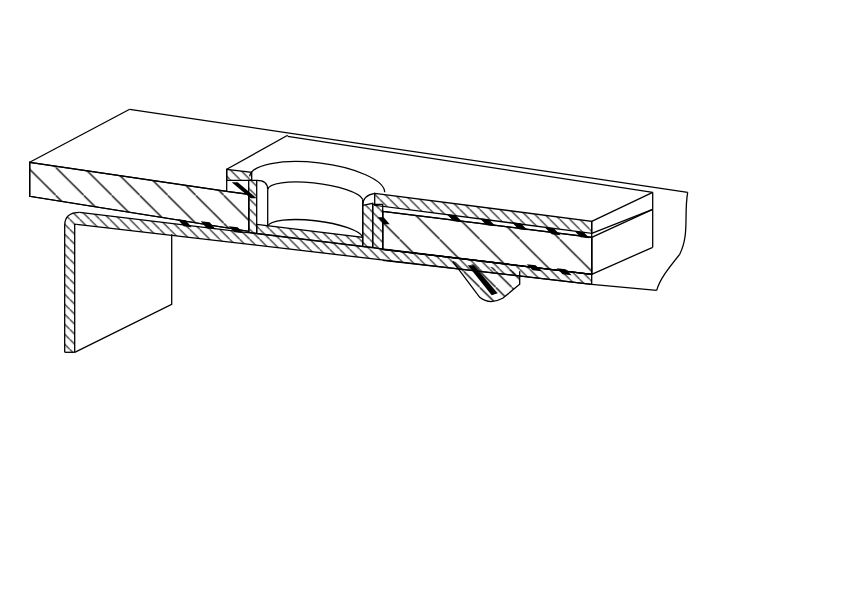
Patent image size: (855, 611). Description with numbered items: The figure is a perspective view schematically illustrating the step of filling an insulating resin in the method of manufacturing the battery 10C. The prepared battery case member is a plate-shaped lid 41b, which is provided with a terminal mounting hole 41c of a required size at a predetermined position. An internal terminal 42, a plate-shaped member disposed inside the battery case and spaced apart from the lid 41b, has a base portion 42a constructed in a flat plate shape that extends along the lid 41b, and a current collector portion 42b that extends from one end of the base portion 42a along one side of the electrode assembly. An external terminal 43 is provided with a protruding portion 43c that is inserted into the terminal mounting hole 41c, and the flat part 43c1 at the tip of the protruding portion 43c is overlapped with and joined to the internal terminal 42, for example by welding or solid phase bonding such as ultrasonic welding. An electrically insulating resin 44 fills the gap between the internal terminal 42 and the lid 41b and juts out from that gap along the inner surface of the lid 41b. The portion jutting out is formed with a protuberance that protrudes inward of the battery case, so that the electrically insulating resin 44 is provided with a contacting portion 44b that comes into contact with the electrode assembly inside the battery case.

The battery 10C is at (433, 96).
The lid 41b is at (205, 136).
The terminal mounting hole 41c is at (290, 178).
The internal terminal 42 is at (361, 291).
The base portion 42a is at (401, 268).
The current collector portion 42b is at (140, 296).
The external terminal 43 is at (508, 190).
The protruding portion 43c is at (331, 204).
The flat part 43c1 is at (331, 256).
The electrically insulating resin 44 is at (246, 240).
The contacting portion 44b is at (490, 304).